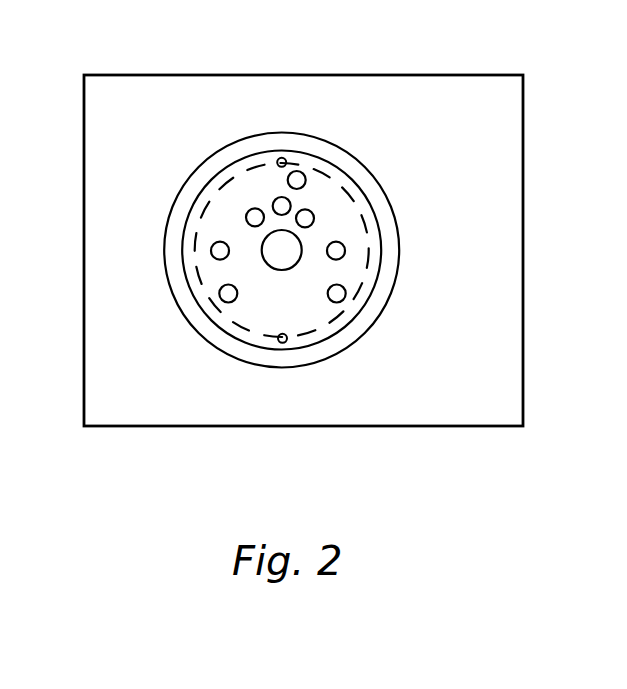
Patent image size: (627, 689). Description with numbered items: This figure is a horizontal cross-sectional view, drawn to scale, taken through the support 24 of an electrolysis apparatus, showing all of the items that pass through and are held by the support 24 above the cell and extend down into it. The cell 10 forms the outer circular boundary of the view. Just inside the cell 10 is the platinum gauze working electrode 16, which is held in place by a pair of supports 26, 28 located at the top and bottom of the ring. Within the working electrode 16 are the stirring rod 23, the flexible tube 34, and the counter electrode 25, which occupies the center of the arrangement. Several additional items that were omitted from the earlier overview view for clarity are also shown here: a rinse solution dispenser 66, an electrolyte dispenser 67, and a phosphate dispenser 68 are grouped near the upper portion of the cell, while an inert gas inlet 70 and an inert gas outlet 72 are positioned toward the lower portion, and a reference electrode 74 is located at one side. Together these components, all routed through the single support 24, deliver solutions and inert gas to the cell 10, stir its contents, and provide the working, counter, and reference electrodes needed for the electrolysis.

The cell 10 is at (380, 185).
The platinum gauze working electrode 16 is at (373, 211).
The stirring rod 23 is at (347, 251).
The support 24 is at (524, 123).
The counter electrode 25 is at (263, 240).
The support 26 is at (285, 343).
The support 28 is at (280, 159).
The flexible tube 34 is at (299, 172).
The rinse solution dispenser 66 is at (253, 209).
The electrolyte dispenser 67 is at (306, 209).
The phosphate dispenser 68 is at (280, 198).
The inert gas inlet 70 is at (343, 302).
The inert gas outlet 72 is at (222, 304).
The reference electrode 74 is at (211, 257).